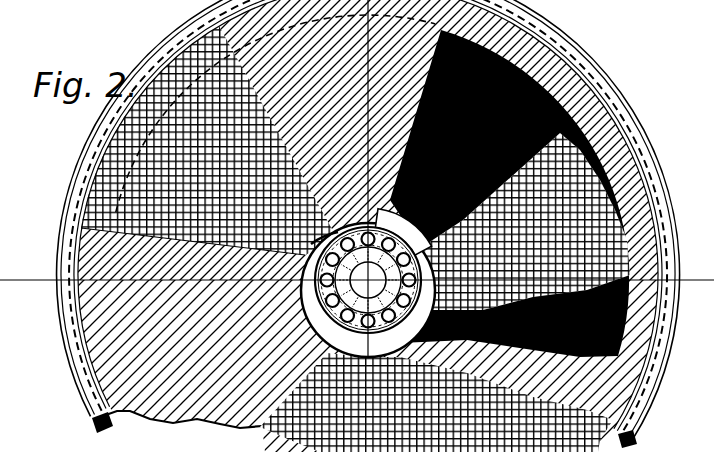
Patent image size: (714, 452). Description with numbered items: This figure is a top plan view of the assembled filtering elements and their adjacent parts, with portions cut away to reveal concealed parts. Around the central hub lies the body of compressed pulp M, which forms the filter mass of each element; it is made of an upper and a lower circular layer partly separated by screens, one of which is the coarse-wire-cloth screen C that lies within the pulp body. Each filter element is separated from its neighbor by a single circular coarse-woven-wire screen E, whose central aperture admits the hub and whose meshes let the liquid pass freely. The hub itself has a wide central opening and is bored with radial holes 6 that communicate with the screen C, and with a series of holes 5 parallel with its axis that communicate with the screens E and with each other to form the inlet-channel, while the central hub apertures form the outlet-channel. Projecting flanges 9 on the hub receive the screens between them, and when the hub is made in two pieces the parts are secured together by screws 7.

The holes parallel with hub axis 5 is at (403, 232).
The radial holes 6 is at (368, 280).
The screws 7 is at (358, 208).
The projecting flanges 9 is at (368, 290).
The coarse-woven-wire screen E is at (209, 140).
The body of compressed pulp M is at (357, 226).
The coarse-wire-cloth screen C is at (525, 221).